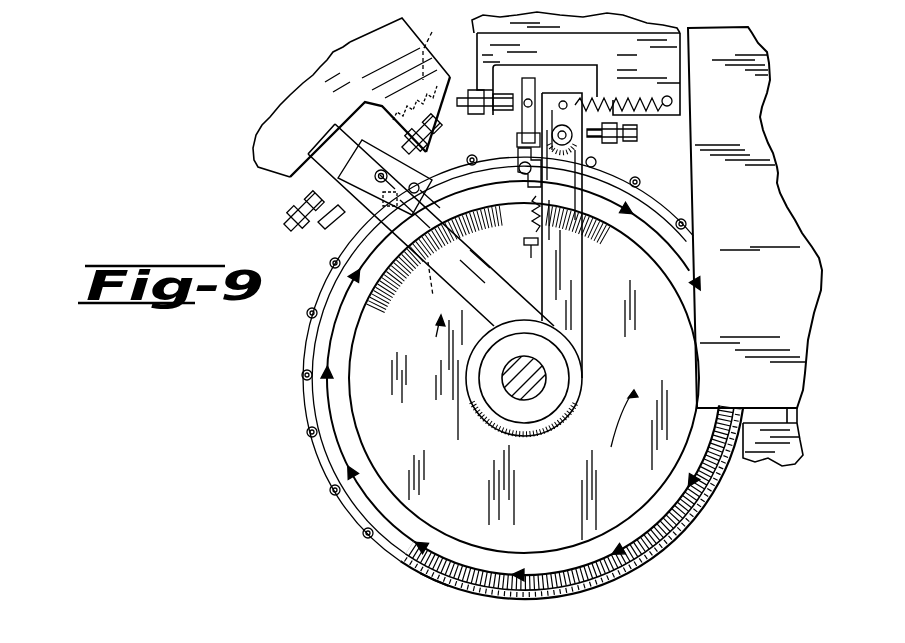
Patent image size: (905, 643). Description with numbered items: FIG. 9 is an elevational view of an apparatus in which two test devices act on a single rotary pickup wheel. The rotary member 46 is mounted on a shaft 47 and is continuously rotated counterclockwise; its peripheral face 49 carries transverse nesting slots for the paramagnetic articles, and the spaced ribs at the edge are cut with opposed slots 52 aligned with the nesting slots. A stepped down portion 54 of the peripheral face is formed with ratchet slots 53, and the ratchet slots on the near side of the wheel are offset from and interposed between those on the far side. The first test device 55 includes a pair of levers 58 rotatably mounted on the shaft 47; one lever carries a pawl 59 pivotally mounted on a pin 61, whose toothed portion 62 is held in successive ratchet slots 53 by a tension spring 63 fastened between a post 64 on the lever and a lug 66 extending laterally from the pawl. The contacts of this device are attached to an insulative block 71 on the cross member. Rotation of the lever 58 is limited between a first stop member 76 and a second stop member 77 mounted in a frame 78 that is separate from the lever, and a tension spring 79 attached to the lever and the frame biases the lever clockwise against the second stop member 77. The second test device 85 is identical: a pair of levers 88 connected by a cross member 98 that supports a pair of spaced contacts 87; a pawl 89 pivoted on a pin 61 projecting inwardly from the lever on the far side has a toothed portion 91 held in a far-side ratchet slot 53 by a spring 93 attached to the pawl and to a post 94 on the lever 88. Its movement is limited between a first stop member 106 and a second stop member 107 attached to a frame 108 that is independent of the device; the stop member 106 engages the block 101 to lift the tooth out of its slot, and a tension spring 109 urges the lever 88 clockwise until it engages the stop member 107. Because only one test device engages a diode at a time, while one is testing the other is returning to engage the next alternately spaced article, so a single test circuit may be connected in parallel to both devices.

The rotary member 46 is at (449, 590).
The shaft 47 is at (502, 383).
The peripheral face 49 is at (377, 547).
The slots 52 is at (585, 597).
The ratchet slots 53 is at (310, 385).
The stepped down portion 54 is at (340, 460).
The test device 55 is at (602, 333).
The levers 58 is at (575, 320).
The pawl 59 is at (522, 180).
The pin 61 is at (555, 125).
The toothed portion 62 is at (530, 222).
The tension spring 63 is at (539, 235).
The post 64 is at (531, 258).
The lug 66 is at (519, 168).
The block 71 is at (518, 110).
The first stop member 76 is at (530, 158).
The second stop member 77 is at (588, 136).
The frame 78 is at (607, 43).
The tension spring 79 is at (663, 90).
The second test device 85 is at (428, 371).
The contacts 87 is at (327, 177).
The levers 88 is at (448, 287).
The pawl 89 is at (416, 286).
The toothed portion 91 is at (396, 204).
The spring 93 is at (412, 218).
The post 94 is at (420, 326).
The cross member 98 is at (338, 140).
The block 101 is at (298, 200).
The first stop member 106 is at (328, 226).
The second stop member 107 is at (437, 93).
The frame 108 is at (347, 92).
The tension spring 109 is at (431, 45).